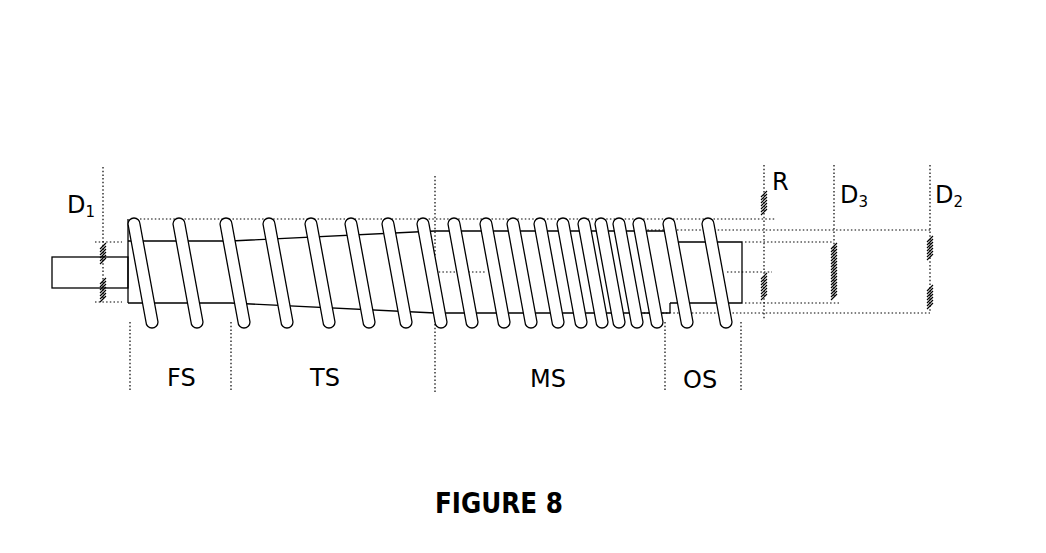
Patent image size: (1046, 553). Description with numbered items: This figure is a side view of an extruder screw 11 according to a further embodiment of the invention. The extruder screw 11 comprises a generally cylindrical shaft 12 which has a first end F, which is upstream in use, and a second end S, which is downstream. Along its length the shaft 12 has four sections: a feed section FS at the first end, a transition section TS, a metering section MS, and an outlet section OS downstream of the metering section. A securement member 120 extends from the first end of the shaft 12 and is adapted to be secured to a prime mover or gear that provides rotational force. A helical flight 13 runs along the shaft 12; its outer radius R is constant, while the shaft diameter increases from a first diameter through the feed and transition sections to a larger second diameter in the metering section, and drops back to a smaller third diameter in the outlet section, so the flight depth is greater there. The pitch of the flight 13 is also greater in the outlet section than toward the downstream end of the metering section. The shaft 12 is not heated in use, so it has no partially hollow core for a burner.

The extruder screw 11 is at (480, 224).
The shaft 12 is at (630, 245).
The flight 13 is at (230, 222).
The securement member 120 is at (68, 278).